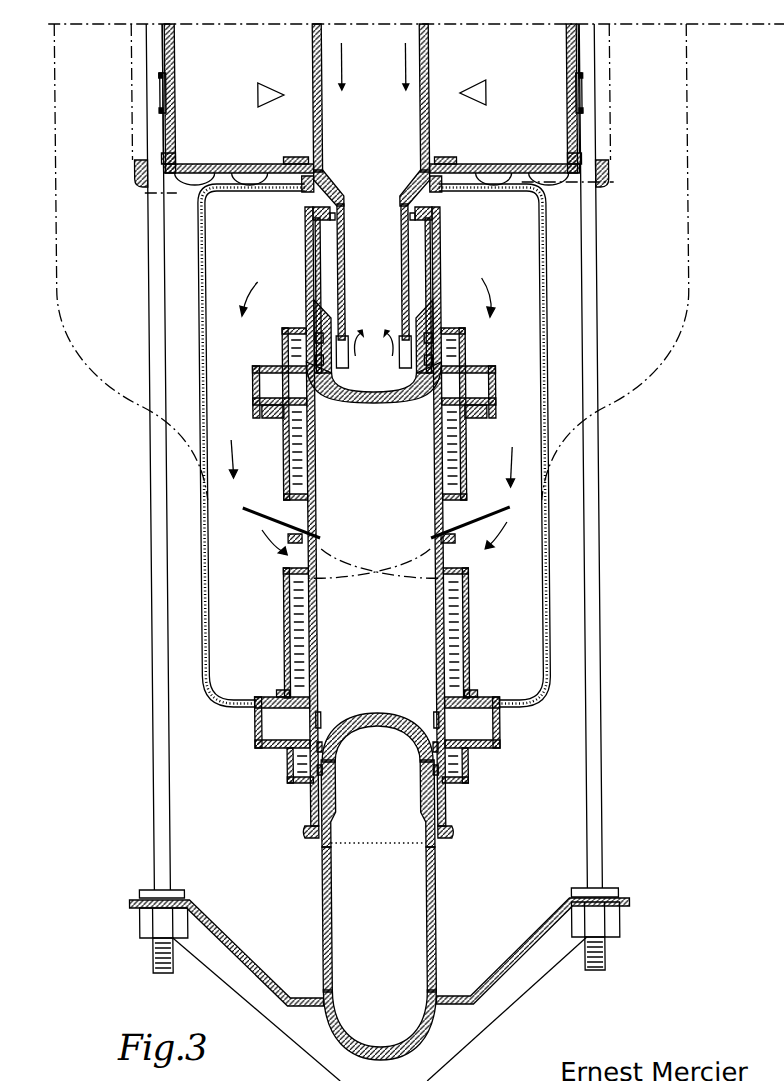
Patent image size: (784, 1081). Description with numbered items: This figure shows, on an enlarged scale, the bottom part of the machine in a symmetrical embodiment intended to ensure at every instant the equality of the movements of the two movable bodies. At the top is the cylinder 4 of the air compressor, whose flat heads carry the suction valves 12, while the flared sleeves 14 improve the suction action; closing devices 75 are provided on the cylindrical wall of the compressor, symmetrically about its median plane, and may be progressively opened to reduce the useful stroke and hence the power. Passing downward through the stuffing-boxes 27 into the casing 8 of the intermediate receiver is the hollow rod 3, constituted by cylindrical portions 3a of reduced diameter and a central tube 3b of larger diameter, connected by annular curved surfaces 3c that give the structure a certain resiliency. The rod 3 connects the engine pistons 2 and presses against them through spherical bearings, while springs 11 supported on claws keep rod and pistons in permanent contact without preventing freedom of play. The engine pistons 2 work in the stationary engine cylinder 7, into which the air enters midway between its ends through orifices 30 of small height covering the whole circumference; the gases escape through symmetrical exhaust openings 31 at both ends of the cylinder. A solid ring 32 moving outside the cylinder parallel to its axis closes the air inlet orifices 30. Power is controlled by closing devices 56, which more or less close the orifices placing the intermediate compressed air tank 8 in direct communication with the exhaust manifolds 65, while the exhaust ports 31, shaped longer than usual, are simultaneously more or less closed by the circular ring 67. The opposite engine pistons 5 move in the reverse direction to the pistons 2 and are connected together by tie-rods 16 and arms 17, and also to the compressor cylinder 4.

The rod 3 is at (376, 64).
The cylindrical portions 3a is at (407, 268).
The central tube 3b is at (429, 54).
The annular curved surfaces 3c is at (325, 198).
The cylinder 4 is at (577, 42).
The closing devices 75 is at (160, 95).
The suction valves 12 is at (198, 166).
The flared sleeves 14 is at (181, 186).
The stuffing-boxes 27 is at (305, 196).
The springs 11 is at (333, 216).
The engine pistons 2 is at (309, 268).
The engine cylinders 7 is at (439, 296).
The closing device 67 is at (298, 373).
The exhaust manifolds 65 is at (467, 383).
The exhaust openings 31 is at (311, 397).
The air inlet orifices 30 is at (298, 557).
The solid ring 32 is at (446, 545).
The casing of intermediate receiver 8 is at (199, 561).
The tie-rods 16 is at (145, 627).
The closing devices 56 is at (466, 690).
The engine pistons 5 is at (428, 899).
The arms 17 is at (247, 974).